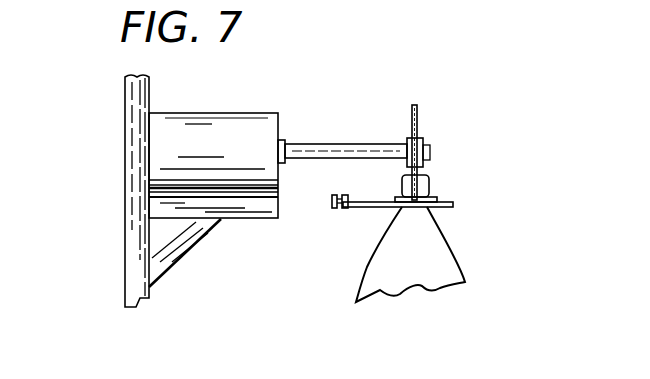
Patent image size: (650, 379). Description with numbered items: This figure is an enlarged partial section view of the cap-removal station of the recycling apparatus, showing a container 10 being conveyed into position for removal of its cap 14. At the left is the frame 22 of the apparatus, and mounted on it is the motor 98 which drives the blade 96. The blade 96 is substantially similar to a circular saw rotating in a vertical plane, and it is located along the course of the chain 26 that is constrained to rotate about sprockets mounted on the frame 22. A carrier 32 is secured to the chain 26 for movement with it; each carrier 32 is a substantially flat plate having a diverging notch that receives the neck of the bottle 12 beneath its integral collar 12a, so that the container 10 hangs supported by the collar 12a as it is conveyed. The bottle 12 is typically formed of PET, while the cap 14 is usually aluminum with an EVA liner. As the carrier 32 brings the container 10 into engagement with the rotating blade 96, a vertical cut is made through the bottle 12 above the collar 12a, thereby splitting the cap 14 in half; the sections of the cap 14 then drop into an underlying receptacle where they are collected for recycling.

The container 10 is at (473, 278).
The bottle 12 is at (368, 267).
The collar 12a is at (432, 196).
The cap 14 is at (420, 187).
The frame 22 is at (118, 182).
The chain 26 is at (332, 200).
The carrier 32 is at (448, 208).
The blade 96 is at (417, 122).
The motor 98 is at (237, 120).